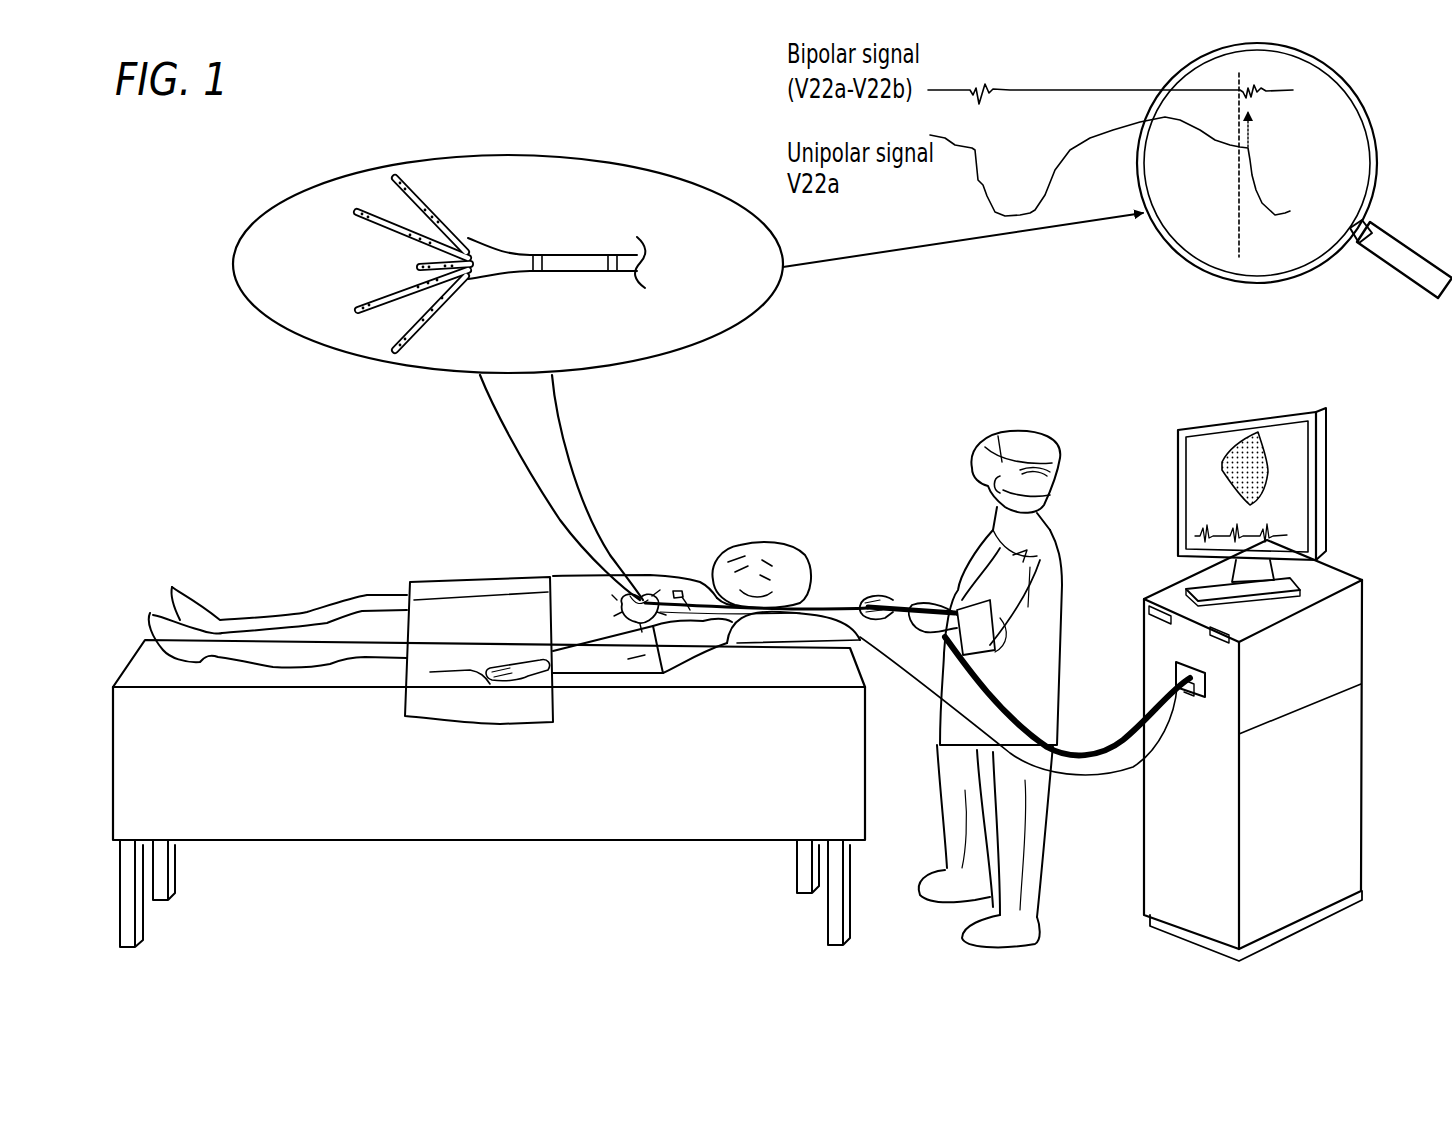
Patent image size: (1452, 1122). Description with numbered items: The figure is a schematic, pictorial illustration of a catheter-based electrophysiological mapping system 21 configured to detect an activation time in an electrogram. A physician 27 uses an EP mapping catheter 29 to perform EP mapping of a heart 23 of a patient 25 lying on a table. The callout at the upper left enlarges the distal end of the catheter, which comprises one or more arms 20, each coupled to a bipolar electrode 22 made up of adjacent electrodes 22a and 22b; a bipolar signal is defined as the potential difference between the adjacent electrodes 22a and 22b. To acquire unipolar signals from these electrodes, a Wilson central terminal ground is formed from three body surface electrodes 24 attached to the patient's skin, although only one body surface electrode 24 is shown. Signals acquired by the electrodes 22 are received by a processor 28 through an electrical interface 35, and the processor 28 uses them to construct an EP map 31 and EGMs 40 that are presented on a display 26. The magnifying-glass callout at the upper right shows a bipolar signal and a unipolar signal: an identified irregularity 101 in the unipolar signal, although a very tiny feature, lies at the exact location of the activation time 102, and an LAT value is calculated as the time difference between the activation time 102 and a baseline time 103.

The arm 20 is at (437, 206).
The EP mapping system 21 is at (295, 487).
The bipolar electrode 22 is at (411, 266).
The electrode 22a is at (362, 305).
The electrode 22b is at (378, 303).
The heart 23 is at (620, 598).
The body surface electrode 24 is at (678, 590).
The patient 25 is at (787, 546).
The display 26 is at (1328, 438).
The physician 27 is at (1045, 434).
The processor 28 is at (1364, 626).
The EP mapping catheter 29 is at (848, 598).
The EP map 31 is at (1248, 432).
The electrical interface 35 is at (1198, 698).
The EGMs 40 is at (1290, 528).
The irregularity 101 is at (1258, 149).
The activation time 102 is at (1268, 101).
The baseline time 103 is at (1241, 243).